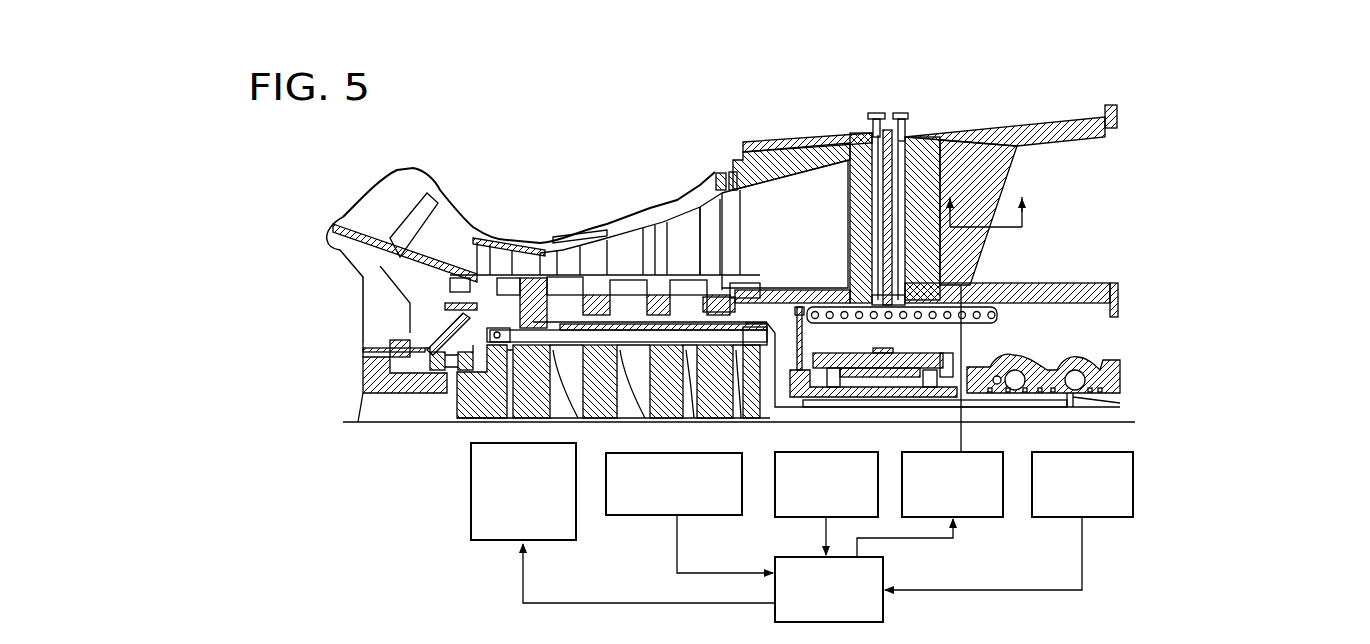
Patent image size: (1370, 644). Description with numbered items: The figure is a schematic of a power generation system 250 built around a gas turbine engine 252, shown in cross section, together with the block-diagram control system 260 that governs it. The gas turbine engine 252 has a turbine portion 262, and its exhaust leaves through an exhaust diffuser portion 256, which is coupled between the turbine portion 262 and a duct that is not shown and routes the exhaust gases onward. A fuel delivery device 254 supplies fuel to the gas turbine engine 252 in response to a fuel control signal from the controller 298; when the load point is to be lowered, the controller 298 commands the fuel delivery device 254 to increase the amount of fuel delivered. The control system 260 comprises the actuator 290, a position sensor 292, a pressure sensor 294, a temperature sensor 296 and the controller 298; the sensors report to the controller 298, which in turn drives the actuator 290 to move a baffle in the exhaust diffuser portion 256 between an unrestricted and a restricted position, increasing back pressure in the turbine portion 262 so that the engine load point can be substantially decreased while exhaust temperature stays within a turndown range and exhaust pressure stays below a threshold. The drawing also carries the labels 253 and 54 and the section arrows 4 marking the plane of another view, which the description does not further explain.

The power generation system 250 is at (640, 143).
The gas turbine engine 252 is at (473, 170).
The combustion chamber 253 is at (820, 235).
The fuel delivery device 254 is at (471, 490).
The exhaust diffuser portion 256 is at (1138, 100).
The control system 260 is at (1197, 378).
The turbine portion 262 is at (513, 237).
The actuator 290 is at (977, 517).
The position sensor 292 is at (1133, 483).
The pressure sensor 294 is at (790, 518).
The temperature sensor 296 is at (637, 517).
The controller 298 is at (883, 622).
The fuel injector rod 54 is at (783, 343).
The section line 4- 4 is at (985, 197).